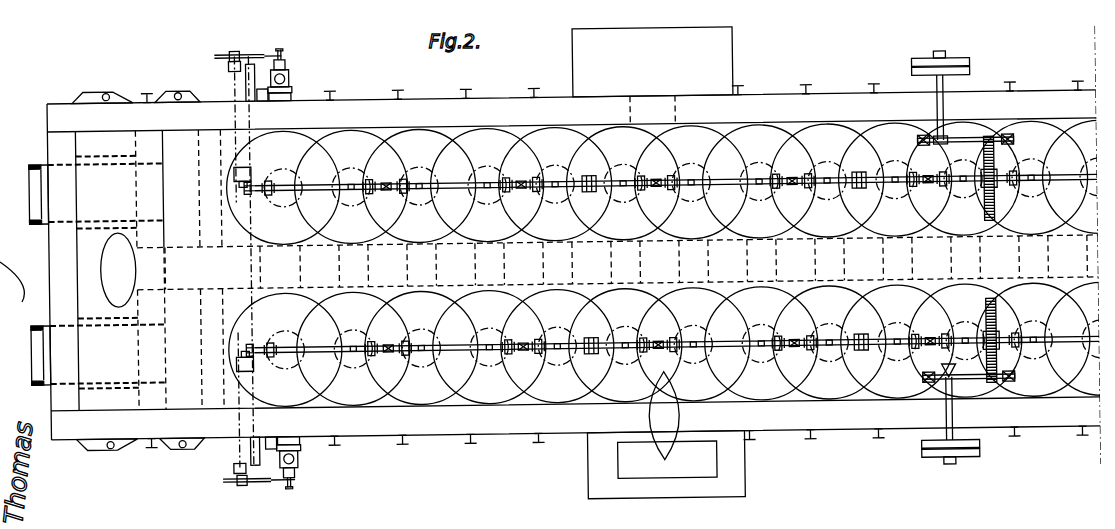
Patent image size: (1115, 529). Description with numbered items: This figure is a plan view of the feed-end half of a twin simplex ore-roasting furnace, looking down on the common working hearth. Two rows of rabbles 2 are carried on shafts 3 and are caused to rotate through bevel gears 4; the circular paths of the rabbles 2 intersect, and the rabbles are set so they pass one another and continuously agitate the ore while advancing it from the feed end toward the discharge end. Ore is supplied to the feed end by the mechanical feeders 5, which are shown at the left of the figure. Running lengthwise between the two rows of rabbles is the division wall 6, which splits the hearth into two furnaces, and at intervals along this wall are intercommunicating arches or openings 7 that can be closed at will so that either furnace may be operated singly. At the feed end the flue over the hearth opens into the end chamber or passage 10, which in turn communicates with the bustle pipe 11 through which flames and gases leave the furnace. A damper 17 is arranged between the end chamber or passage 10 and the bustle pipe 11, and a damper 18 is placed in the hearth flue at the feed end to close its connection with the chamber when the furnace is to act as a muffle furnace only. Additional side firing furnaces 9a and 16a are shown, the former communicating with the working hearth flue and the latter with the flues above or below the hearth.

The rabbles 2 is at (670, 262).
The shafts 3 is at (667, 264).
The bevel gears 4 is at (642, 264).
The mechanical feeders 5 is at (263, 269).
The division wall 6 is at (626, 262).
The intercommunicating arches or openings 7 is at (617, 262).
The side firing furnace 9a is at (666, 435).
The end chamber or passage 10 is at (120, 271).
The bustle pipe 11 is at (118, 270).
The side firing furnace 16a is at (652, 75).
The damper 17 is at (105, 270).
The damper 18 is at (182, 270).